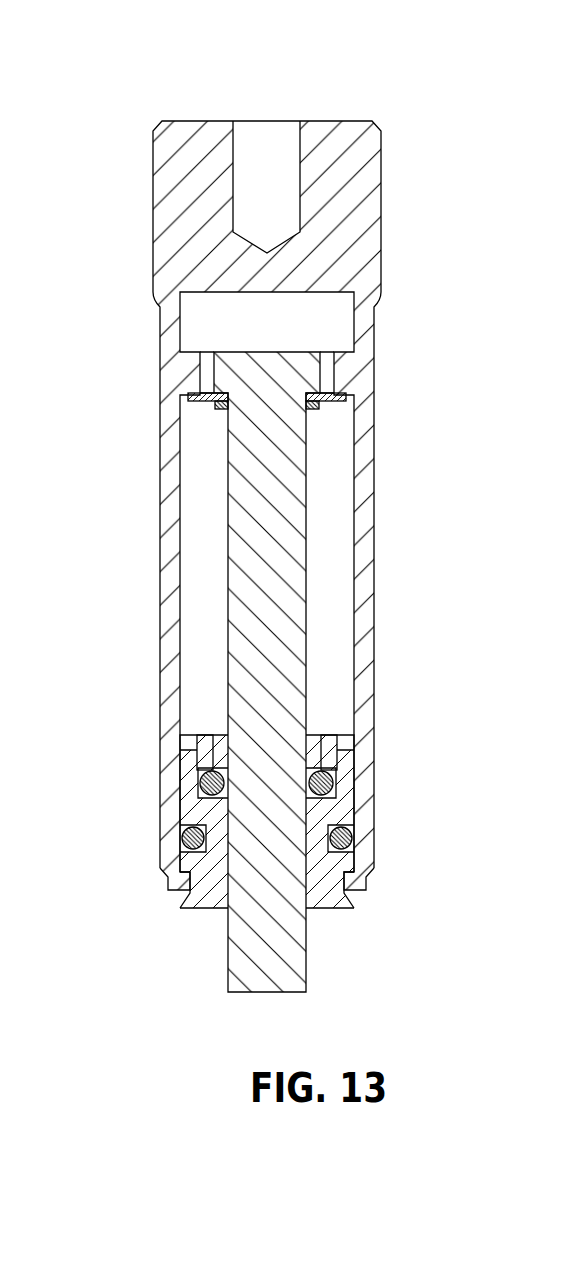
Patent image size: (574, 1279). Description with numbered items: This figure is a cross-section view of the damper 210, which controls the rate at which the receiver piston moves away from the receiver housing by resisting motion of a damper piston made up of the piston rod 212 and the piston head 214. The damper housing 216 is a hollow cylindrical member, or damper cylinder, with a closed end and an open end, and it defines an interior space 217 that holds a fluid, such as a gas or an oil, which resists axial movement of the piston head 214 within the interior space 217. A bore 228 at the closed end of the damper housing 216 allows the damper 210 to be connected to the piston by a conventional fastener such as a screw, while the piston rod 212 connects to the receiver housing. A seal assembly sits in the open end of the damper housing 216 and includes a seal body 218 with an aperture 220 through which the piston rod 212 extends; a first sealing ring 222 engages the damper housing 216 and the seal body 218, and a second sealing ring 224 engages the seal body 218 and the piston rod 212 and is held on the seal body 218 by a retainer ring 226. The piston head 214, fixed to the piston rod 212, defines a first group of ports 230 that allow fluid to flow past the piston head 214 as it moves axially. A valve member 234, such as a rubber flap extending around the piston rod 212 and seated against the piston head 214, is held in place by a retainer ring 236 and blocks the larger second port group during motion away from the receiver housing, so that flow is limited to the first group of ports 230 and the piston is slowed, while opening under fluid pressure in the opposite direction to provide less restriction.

The damper 210 is at (129, 112).
The piston rod 212 is at (227, 943).
The piston head 214 is at (340, 352).
The damper housing 216 is at (382, 872).
The interior space 217 is at (318, 597).
The seal body 218 is at (345, 806).
The aperture 220 is at (310, 883).
The first sealing ring 222 is at (352, 845).
The second sealing ring 224 is at (335, 787).
The retainer ring 226 is at (332, 735).
The bore 228 is at (325, 122).
The first group of ports 230 is at (197, 368).
The valve member 234 is at (327, 400).
The retainer ring 236 is at (308, 407).